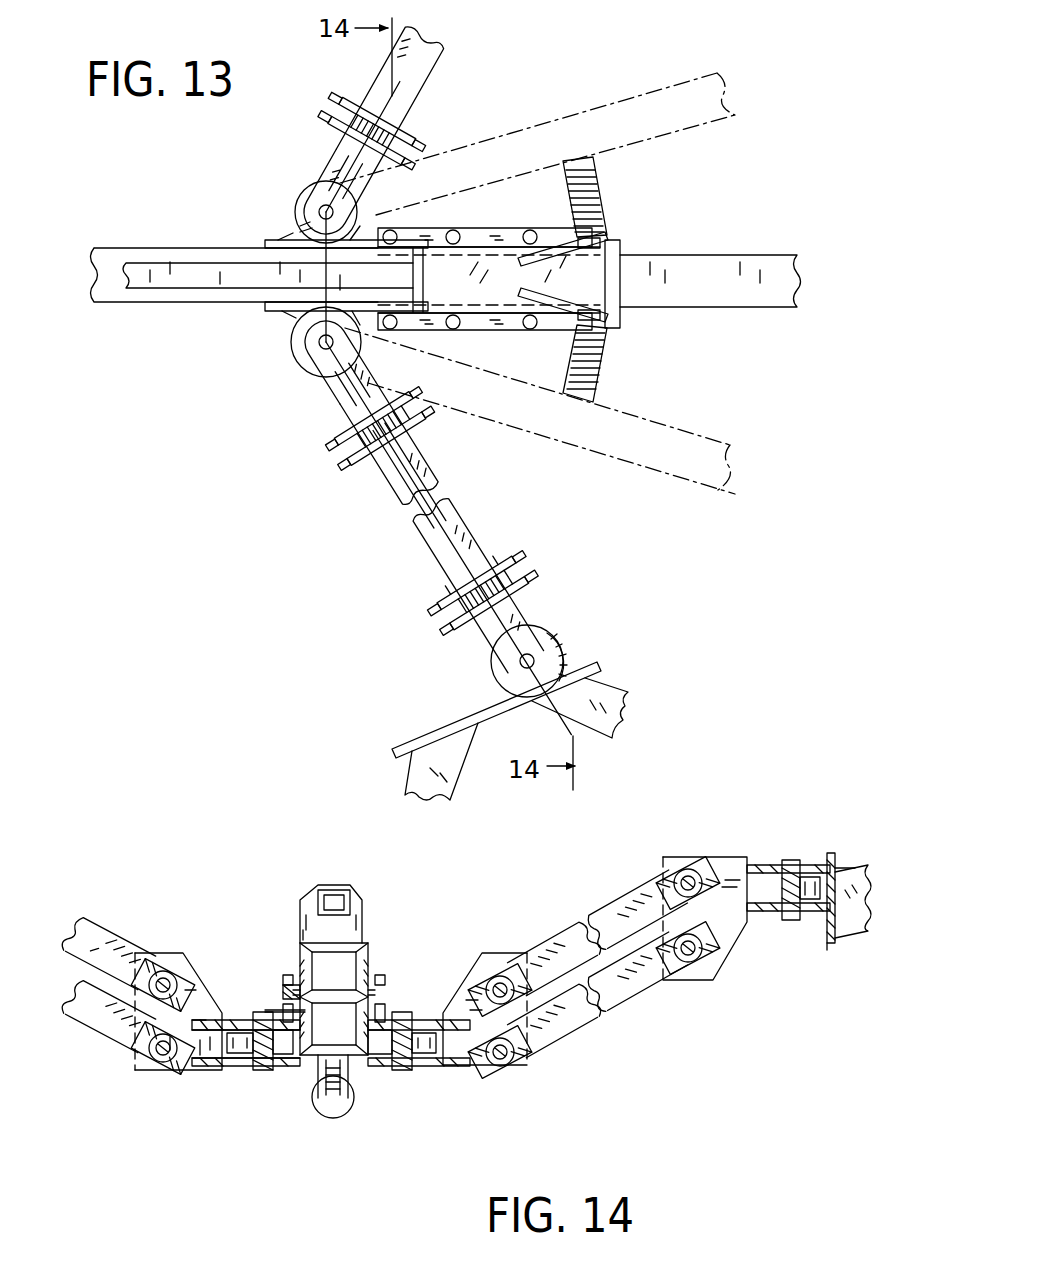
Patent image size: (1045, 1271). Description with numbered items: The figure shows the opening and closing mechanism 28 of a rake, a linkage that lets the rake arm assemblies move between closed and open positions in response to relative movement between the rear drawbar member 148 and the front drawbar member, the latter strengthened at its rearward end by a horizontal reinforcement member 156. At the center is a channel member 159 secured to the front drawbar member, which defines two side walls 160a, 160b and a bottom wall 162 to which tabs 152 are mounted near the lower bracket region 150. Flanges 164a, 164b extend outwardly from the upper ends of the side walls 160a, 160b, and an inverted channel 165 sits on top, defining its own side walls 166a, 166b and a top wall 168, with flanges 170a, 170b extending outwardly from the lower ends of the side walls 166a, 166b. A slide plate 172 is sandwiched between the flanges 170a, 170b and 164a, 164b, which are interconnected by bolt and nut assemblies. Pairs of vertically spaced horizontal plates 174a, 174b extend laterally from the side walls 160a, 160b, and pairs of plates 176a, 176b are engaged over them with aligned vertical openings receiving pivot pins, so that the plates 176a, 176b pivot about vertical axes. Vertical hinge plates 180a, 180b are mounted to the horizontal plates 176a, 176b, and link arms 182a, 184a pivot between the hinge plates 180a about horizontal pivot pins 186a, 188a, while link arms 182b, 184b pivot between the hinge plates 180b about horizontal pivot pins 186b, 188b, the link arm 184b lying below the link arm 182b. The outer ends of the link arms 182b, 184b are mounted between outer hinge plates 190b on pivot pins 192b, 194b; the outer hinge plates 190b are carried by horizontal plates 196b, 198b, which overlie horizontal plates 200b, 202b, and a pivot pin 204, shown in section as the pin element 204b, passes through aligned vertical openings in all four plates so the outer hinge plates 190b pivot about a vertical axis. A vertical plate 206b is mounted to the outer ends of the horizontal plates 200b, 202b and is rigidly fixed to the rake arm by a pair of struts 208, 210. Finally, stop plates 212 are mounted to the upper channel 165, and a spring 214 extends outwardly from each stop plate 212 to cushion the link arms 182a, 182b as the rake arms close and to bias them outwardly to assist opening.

In FIG. 13, the opening and closing mechanism 28 is at (196, 379).
In FIG. 14, the rear drawbar member 148 is at (366, 990).
In FIG. 14, the lower pivot 150 is at (332, 1120).
In FIG. 14, the tabs 152 is at (320, 1100).
In FIG. 14, the horizontal reinforcement member 156 is at (358, 895).
In FIG. 14, the channel member 159 is at (292, 1012).
In FIG. 13, the side wall 160a is at (270, 240).
In FIG. 14, the side wall 160a is at (262, 1064).
In FIG. 13, the side wall 160b is at (280, 312).
In FIG. 14, the side wall 160b is at (370, 1062).
In FIG. 14, the bottom wall 162 is at (283, 1063).
In FIG. 14, the flange 164a is at (284, 1012).
In FIG. 14, the flange 164b is at (386, 1010).
In FIG. 13, the inverted channel 165 is at (622, 245).
In FIG. 14, the inverted channel 165 is at (305, 938).
In FIG. 14, the side wall 166a is at (284, 980).
In FIG. 14, the side wall 166b is at (384, 978).
In FIG. 14, the top wall 168 is at (348, 918).
In FIG. 13, the flange 170a is at (512, 232).
In FIG. 14, the flange 170a is at (298, 1000).
In FIG. 13, the flange 170b is at (512, 328).
In FIG. 14, the flange 170b is at (372, 998).
In FIG. 14, the slide plate 172 is at (303, 1010).
In FIG. 13, the horizontal plates 174a is at (296, 200).
In FIG. 14, the horizontal plates 174a is at (180, 1066).
In FIG. 13, the horizontal plates 174b is at (292, 348).
In FIG. 14, the horizontal plates 174b is at (440, 1032).
In FIG. 13, the plates 176a is at (318, 176).
In FIG. 14, the plates 176a is at (188, 1064).
In FIG. 13, the horizontal plates 176b is at (334, 388).
In FIG. 14, the horizontal plates 176b is at (452, 1042).
In FIG. 13, the hinge plates 180a is at (371, 130).
In FIG. 14, the hinge plates 180a is at (170, 975).
In FIG. 13, the hinge plates 180b is at (322, 382).
In FIG. 14, the hinge plates 180b is at (520, 985).
In FIG. 13, the link arm 182a is at (403, 65).
In FIG. 14, the link arm 182a is at (100, 915).
In FIG. 13, the link arm 182b is at (458, 520).
In FIG. 14, the link arm 182b is at (635, 890).
In FIG. 14, the link arm 184a is at (95, 1022).
In FIG. 14, the link arm 184b is at (633, 1000).
In FIG. 14, the horizontal pivot pin 186a is at (165, 975).
In FIG. 13, the horizontal pivot pin 186b is at (362, 447).
In FIG. 14, the horizontal pivot pin 186b is at (502, 990).
In FIG. 14, the horizontal pivot pin 188a is at (150, 1062).
In FIG. 14, the horizontal pivot pin 188b is at (505, 1062).
In FIG. 13, the outer hinge plates 190b is at (528, 590).
In FIG. 14, the outer hinge plates 190b is at (715, 858).
In FIG. 13, the pivot pin 192b is at (506, 560).
In FIG. 14, the pivot pin 192b is at (700, 862).
In FIG. 14, the pivot pin 194b is at (700, 962).
In FIG. 13, the horizontal plate 196b is at (522, 616).
In FIG. 14, the horizontal plate 196b is at (772, 865).
In FIG. 14, the horizontal plate 198b is at (720, 985).
In FIG. 13, the horizontal plate 200b is at (582, 660).
In FIG. 14, the horizontal plate 200b is at (830, 860).
In FIG. 14, the horizontal plate 202b is at (829, 940).
In FIG. 13, the pivot pin 204 is at (550, 650).
In FIG. 14, the outer clamp block 204b is at (790, 918).
In FIG. 13, the vertical plate 206b is at (442, 735).
In FIG. 14, the vertical plate 206b is at (838, 870).
In FIG. 13, the first wing beam 208 is at (410, 774).
In FIG. 13, the second wing beam 210 is at (614, 692).
In FIG. 14, the second wing beam 210 is at (846, 880).
In FIG. 13, the stop plates 212 is at (556, 238).
In FIG. 13, the springs 214 is at (598, 195).